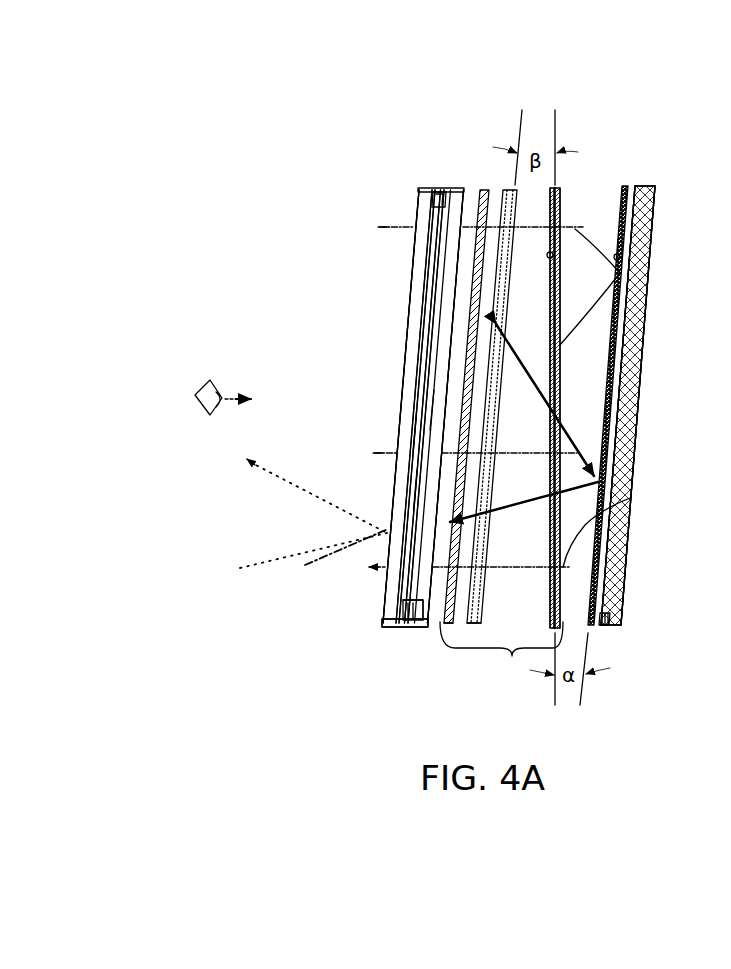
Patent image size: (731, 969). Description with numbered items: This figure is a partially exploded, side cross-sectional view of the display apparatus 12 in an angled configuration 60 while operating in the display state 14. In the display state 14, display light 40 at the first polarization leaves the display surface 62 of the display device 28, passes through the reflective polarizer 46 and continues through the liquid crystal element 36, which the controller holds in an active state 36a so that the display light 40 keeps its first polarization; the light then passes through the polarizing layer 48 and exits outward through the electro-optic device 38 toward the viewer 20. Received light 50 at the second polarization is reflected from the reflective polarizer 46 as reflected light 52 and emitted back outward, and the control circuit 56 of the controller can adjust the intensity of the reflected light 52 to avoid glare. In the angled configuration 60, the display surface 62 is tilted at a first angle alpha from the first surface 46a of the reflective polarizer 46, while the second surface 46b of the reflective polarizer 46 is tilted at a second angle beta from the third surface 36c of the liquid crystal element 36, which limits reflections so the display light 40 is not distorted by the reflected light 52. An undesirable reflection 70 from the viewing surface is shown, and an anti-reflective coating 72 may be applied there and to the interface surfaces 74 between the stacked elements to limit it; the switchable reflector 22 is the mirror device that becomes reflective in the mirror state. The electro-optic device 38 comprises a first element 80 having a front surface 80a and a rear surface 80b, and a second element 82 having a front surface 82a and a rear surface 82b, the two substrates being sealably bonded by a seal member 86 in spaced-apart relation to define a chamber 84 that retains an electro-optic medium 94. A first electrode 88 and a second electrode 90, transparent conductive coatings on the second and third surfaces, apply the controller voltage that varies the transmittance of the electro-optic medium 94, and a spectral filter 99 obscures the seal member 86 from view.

The display apparatus 12 is at (466, 125).
The display state 14 is at (423, 406).
The viewer 20 is at (202, 394).
The switchable reflector 22 is at (501, 658).
The display device 28 is at (632, 187).
The liquid crystal element 36 is at (492, 408).
The active state 36a is at (628, 405).
The third surface 36c is at (482, 587).
The electro-optic device 38 is at (396, 191).
The display light 40 is at (620, 273).
The reflective polarizer 46 is at (560, 202).
The first surface 46a is at (560, 218).
The second surface 46b is at (560, 250).
The polarizing layer 48 is at (467, 378).
The received light 50 is at (356, 552).
The reflected light 52 is at (505, 362).
The control circuit 56 is at (637, 363).
The angled configuration 60 is at (589, 124).
The display surface 62 is at (620, 258).
The undesirable reflection 70 is at (290, 480).
The anti-reflective coating 72 is at (402, 603).
The interface surfaces 74 is at (460, 623).
The first element 80 is at (423, 222).
The front surface 80a is at (412, 250).
The rear surface 80b is at (427, 273).
The second element 82 is at (450, 283).
The front surface 82a is at (438, 300).
The rear surface 82b is at (456, 315).
The chamber 84 is at (425, 355).
The seal member 86 is at (441, 190).
The first electrode 88 is at (428, 410).
The second electrode 90 is at (415, 432).
The electro-optic medium 94 is at (413, 487).
The spectral filter 99 is at (400, 621).